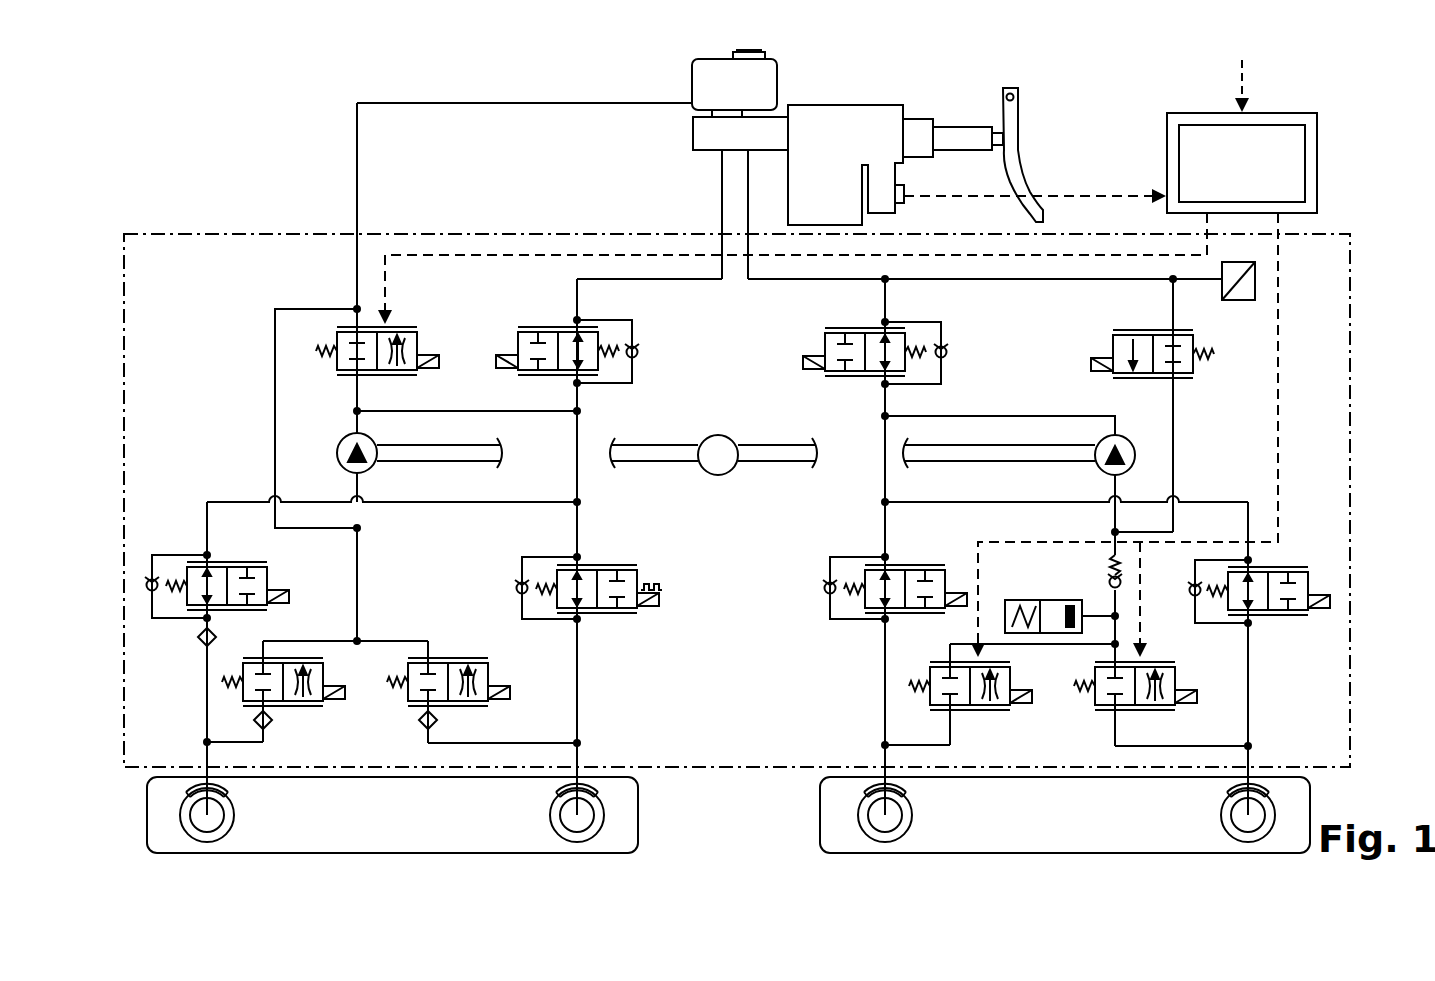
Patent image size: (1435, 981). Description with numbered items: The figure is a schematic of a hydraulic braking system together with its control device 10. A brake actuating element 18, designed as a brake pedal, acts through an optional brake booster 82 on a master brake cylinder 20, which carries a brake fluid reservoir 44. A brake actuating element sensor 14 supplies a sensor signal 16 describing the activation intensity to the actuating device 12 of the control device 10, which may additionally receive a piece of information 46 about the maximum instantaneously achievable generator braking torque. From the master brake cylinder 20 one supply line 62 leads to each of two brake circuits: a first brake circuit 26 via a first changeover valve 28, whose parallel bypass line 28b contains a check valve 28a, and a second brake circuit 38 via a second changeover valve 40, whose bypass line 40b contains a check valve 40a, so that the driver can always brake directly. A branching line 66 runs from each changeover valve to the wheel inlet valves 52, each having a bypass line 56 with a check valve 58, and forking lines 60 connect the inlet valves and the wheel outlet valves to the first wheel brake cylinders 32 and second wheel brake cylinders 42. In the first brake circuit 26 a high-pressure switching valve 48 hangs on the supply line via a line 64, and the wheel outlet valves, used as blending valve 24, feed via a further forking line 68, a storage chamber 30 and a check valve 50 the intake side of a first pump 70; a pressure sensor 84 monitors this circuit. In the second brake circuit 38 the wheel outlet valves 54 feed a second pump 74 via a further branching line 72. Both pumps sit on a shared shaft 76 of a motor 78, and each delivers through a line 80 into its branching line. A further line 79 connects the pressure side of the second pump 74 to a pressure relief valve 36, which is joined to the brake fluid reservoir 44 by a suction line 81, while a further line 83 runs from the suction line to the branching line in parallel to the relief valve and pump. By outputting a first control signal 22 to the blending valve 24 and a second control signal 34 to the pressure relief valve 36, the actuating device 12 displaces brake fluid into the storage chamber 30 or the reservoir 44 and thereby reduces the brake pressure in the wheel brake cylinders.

The control device 10 is at (1318, 146).
The actuating device 12 is at (1305, 185).
The brake actuating element sensor 14 is at (904, 196).
The sensor signal 16 is at (1087, 196).
The brake actuating element 18 is at (1022, 118).
The master brake cylinder 20 is at (696, 138).
The first control signal 22 is at (1284, 357).
The blending valve 24 is at (1160, 667).
The first brake circuit 26 is at (830, 692).
The first changeover valve 28 is at (838, 376).
The check valve 28a is at (947, 352).
The bypass line 28b is at (941, 322).
The storage chamber 30 is at (1020, 600).
The first wheel brake cylinder 32 is at (910, 800).
The second control signal 34 is at (483, 255).
The pressure relief valve 36 is at (400, 327).
The second brake circuit 38 is at (646, 692).
The second changeover valve 40 is at (533, 327).
The check valve 40a is at (640, 353).
The bypass line 40b is at (632, 320).
The second wheel brake cylinder 42 is at (232, 800).
The brake fluid reservoir 44 is at (770, 76).
The piece of information 46 is at (1245, 80).
The high-pressure switching valve 48 is at (1096, 356).
The check valve 50 is at (1105, 580).
The wheel inlet valve 52 is at (267, 570).
The wheel outlet valve 54 is at (452, 663).
The bypass line 56 is at (178, 555).
The check valve 58 is at (150, 592).
The forking line 60 is at (207, 758).
The supply line 62 is at (748, 184).
The line 64 is at (1073, 279).
The branching line 66 is at (577, 459).
The further forking line 68 is at (1114, 530).
The first pump 70 is at (1095, 465).
The further branching line 72 is at (357, 591).
The second pump 74 is at (375, 468).
The shared shaft 76 is at (768, 463).
The motor 78 is at (718, 475).
The further line 79 is at (356, 411).
The line 80 is at (467, 411).
The suction line 81 is at (493, 103).
The brake booster 82 is at (922, 100).
The further line 83 is at (275, 413).
The pressure sensor 84 is at (1241, 300).